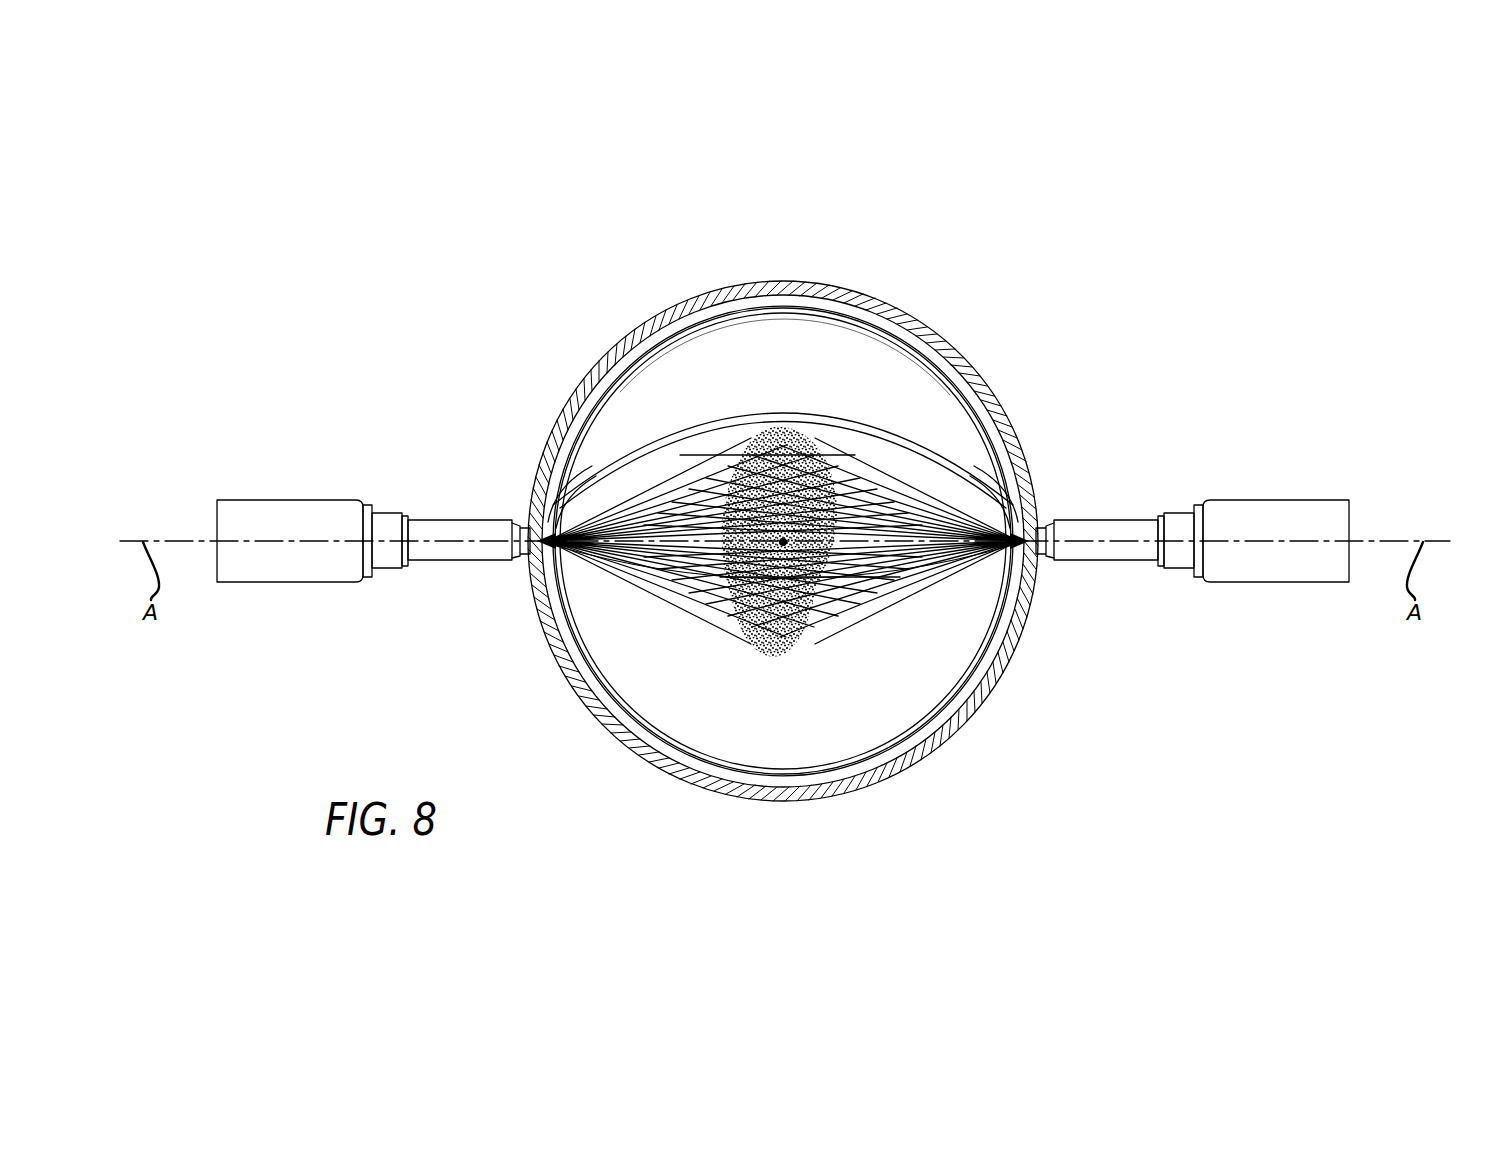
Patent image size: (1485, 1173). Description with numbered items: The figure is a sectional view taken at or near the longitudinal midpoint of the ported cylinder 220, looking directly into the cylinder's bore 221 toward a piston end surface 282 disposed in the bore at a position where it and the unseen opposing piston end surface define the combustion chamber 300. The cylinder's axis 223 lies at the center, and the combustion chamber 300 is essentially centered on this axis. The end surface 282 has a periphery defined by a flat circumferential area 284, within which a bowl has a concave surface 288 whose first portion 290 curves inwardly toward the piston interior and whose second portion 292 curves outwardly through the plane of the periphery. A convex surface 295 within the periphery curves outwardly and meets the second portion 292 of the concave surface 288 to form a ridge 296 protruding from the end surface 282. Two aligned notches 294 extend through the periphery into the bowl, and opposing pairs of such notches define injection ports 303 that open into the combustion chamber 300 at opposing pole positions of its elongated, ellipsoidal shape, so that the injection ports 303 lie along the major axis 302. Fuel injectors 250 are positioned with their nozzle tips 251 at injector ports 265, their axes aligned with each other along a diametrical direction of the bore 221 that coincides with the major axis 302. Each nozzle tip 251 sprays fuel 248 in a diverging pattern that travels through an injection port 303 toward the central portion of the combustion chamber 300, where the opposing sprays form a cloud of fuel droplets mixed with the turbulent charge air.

The ported cylinder 220 is at (628, 336).
The bore 221 is at (592, 386).
The cylinder axis 223 is at (783, 541).
The fuel 248 is at (783, 440).
The fuel injector 250 is at (300, 508).
The nozzle tip 251 is at (525, 560).
The injector port 265 is at (524, 535).
The end surface 282 is at (788, 760).
The flat circumferential area 284 is at (985, 424).
The concave surface 288 is at (918, 375).
The first portion of concave surface 290 is at (715, 370).
The second portion of concave surface 292 is at (928, 563).
The notch 294 is at (784, 461).
The convex surface 295 is at (867, 705).
The ridge 296 is at (847, 413).
The combustion chamber 300 is at (673, 560).
The major axis 302 is at (762, 560).
The injection port 303 is at (552, 525).